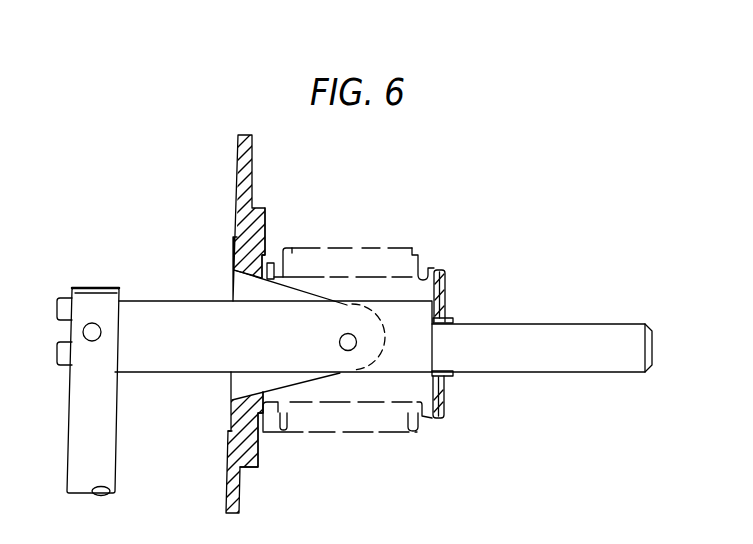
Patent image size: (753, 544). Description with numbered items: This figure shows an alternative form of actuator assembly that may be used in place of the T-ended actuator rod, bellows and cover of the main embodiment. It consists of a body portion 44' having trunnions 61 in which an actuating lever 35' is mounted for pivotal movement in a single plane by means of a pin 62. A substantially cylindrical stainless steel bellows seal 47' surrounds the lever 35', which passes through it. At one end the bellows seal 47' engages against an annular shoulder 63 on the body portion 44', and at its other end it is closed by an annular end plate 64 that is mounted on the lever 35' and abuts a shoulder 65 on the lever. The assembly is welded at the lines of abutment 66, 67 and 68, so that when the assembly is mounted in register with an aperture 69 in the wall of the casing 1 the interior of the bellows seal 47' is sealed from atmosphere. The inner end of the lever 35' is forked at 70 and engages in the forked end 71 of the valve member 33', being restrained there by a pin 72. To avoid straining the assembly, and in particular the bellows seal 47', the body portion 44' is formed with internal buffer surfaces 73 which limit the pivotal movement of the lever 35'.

The casing 1 is at (230, 500).
The valve member 33' is at (63, 392).
The actuating lever 35' is at (542, 331).
The body portion 44' is at (275, 350).
The bellows seal 47' is at (348, 315).
The trunnions 61 is at (290, 380).
The pin 62 is at (357, 344).
The annular shoulder 63 is at (263, 268).
The annular end plate 64 is at (445, 288).
The shoulder 65 is at (422, 322).
The line of abutment 66 is at (292, 266).
The line of abutment 67 is at (443, 417).
The line of abutment 68 is at (447, 375).
The aperture 69 is at (226, 433).
The forked inner end 70 is at (52, 338).
The forked end 71 is at (99, 286).
The pin 72 is at (83, 333).
The internal buffer surfaces 73 is at (261, 282).